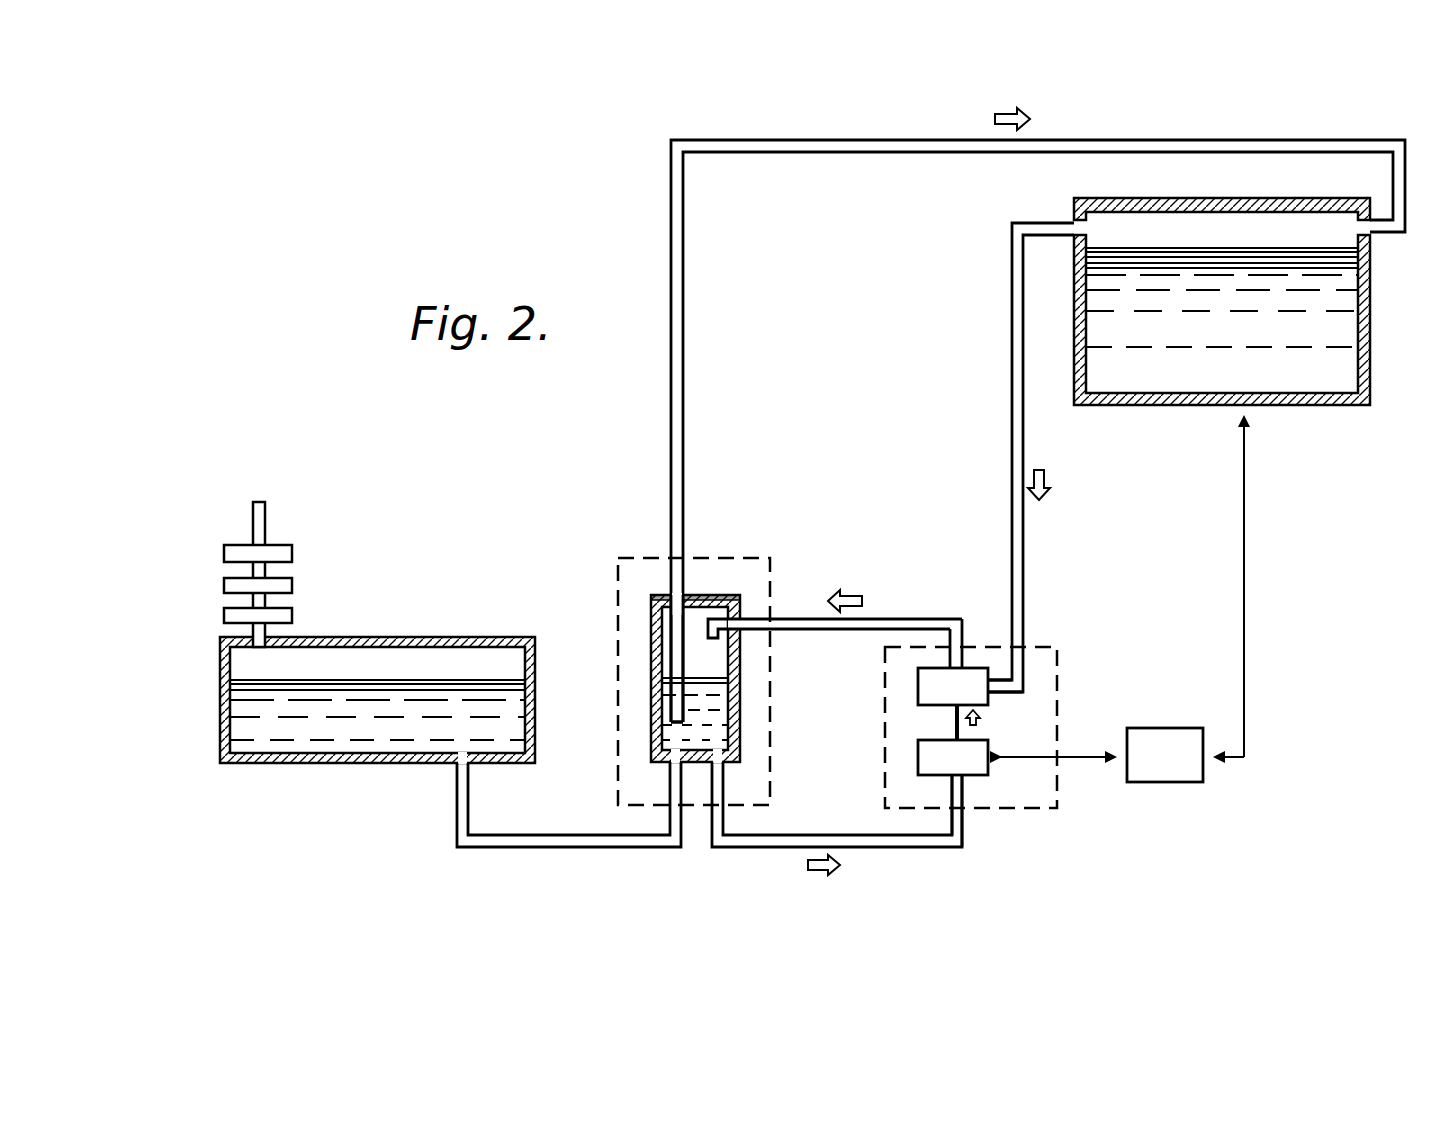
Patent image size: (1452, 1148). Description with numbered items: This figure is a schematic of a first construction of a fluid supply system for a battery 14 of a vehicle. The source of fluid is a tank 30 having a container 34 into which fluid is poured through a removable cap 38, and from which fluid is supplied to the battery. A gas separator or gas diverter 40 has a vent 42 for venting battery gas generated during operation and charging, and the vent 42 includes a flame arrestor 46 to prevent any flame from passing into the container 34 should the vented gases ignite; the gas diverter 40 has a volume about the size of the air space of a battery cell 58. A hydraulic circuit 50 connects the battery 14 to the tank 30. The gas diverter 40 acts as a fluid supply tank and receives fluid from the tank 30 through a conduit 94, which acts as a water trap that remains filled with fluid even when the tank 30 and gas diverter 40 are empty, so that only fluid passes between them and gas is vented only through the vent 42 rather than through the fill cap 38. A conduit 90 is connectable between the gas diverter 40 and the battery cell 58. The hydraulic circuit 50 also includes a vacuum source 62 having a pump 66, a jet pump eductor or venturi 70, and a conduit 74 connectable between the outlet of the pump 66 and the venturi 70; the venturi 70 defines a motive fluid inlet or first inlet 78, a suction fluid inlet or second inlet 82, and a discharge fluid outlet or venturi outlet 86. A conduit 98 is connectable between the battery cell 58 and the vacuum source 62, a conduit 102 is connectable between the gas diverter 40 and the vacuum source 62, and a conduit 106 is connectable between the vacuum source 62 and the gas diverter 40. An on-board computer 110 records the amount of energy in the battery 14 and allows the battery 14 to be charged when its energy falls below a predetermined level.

The battery 14 is at (1358, 312).
The tank 30 is at (343, 637).
The container 34 is at (418, 655).
The removable cap 38 is at (224, 579).
The gas diverter 40 is at (618, 565).
The vent 42 is at (740, 607).
The flame arrestor 46 is at (700, 597).
The hydraulic circuit 50 is at (622, 211).
The battery cell 58 is at (1318, 368).
The vacuum source 62 is at (1058, 800).
The pump 66 is at (980, 777).
The venturi 70 is at (990, 703).
The conduit 74 is at (918, 733).
The first inlet 78 is at (918, 700).
The second inlet 82 is at (995, 694).
The venturi outlet 86 is at (955, 664).
The conduit 90 is at (882, 142).
The conduit 94 is at (565, 840).
The conduit 98 is at (1018, 539).
The conduit 102 is at (898, 838).
The conduit 106 is at (900, 626).
The on-board computer 110 is at (1195, 719).